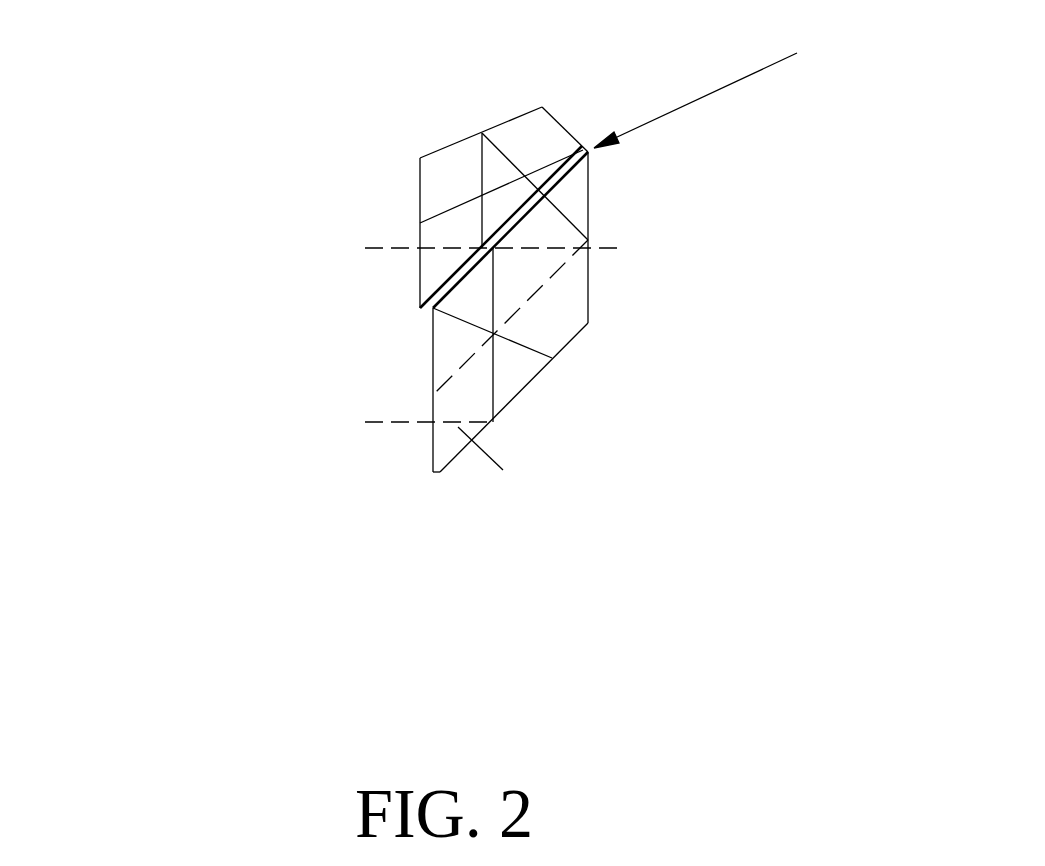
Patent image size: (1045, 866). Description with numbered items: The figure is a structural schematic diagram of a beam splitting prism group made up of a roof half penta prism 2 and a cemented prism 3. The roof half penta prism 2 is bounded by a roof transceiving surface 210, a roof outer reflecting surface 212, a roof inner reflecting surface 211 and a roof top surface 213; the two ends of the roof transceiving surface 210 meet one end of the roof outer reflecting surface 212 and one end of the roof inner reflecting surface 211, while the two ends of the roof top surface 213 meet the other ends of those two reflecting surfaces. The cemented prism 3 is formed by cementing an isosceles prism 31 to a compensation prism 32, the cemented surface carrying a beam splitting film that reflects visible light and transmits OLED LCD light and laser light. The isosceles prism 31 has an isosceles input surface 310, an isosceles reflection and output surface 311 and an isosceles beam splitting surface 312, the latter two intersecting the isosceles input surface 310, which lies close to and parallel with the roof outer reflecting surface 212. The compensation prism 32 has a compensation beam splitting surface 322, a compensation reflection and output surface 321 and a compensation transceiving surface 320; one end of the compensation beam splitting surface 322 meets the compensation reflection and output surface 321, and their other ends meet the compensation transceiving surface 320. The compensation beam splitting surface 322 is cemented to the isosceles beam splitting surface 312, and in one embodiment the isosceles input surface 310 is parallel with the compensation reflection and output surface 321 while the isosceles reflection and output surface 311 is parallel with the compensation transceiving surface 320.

The roof half penta prism 2 is at (442, 170).
The roof transceiving surface 210 is at (420, 200).
The roof inner reflecting surface 211 is at (525, 145).
The roof outer reflecting surface 212 is at (530, 195).
The roof top surface 213 is at (567, 131).
The cemented prism 3 is at (712, 91).
The isosceles input surface 310 is at (565, 176).
The isosceles reflection and output surface 311 is at (588, 285).
The isosceles beam splitting surface 312 is at (480, 327).
The isosceles prism 31 is at (557, 308).
The compensation prism 32 is at (453, 357).
The compensation transceiving surface 320 is at (430, 438).
The compensation reflection and output surface 321 is at (460, 450).
The compensation beam splitting surface 322 is at (472, 327).